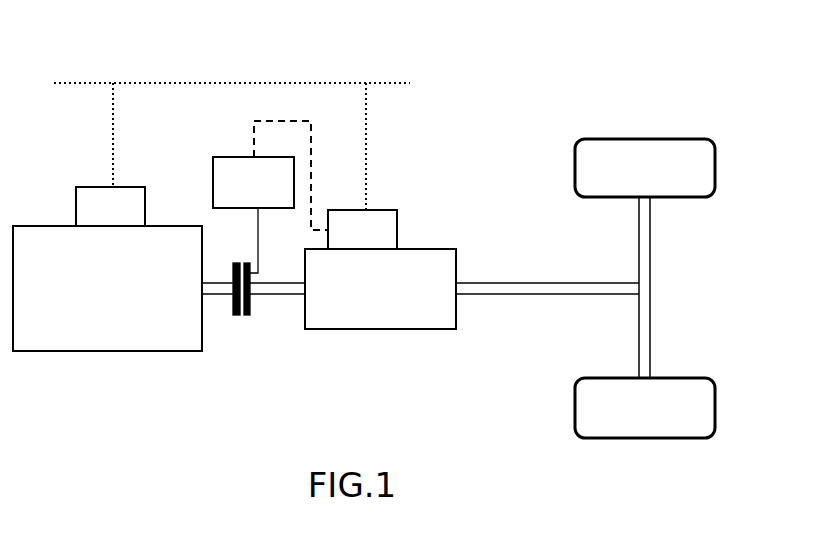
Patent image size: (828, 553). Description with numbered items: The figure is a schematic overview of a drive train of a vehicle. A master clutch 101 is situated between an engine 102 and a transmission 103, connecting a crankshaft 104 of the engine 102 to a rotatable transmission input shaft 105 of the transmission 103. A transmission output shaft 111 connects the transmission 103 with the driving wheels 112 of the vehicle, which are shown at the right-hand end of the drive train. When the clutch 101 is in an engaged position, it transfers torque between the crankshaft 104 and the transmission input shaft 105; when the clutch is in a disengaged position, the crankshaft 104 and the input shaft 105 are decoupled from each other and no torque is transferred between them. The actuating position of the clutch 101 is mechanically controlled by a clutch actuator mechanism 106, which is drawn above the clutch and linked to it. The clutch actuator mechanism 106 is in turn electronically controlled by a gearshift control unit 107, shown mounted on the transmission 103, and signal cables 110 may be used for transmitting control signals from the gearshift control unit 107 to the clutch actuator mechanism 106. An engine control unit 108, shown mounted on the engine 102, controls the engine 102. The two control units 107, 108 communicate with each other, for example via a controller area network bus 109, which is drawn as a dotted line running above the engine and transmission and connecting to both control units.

The master clutch 101 is at (244, 320).
The engine 102 is at (107, 288).
The transmission 103 is at (380, 289).
The crankshaft 104 is at (218, 296).
The transmission input shaft 105 is at (267, 290).
The clutch actuator mechanism 106 is at (253, 215).
The gearshift control unit 107 is at (362, 229).
The engine control unit 108 is at (110, 206).
The controller area network (CAN) bus 109 is at (208, 82).
The signal cables 110 is at (254, 145).
The transmission output shaft 111 is at (533, 290).
The driving wheels 112 is at (667, 180).